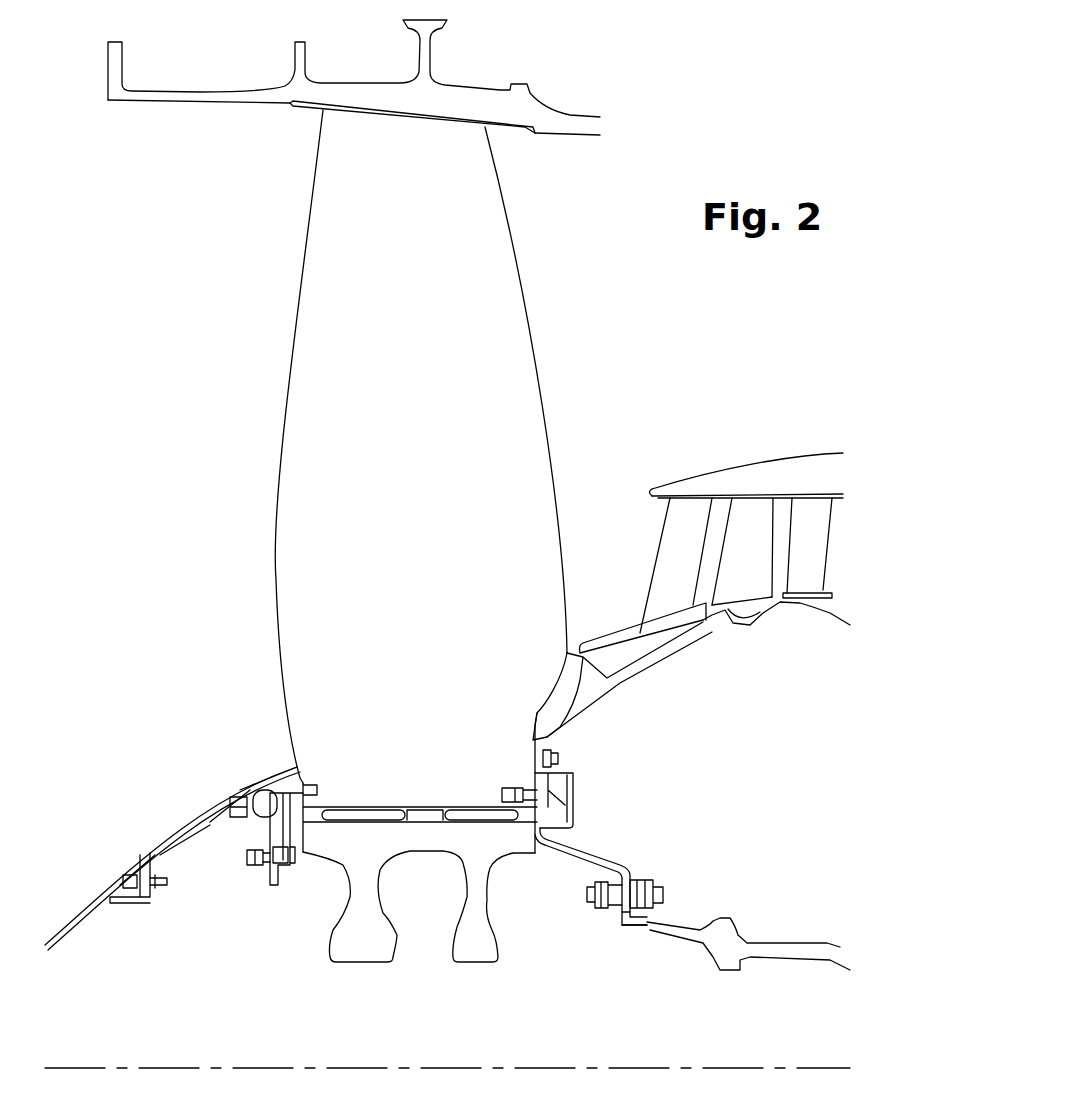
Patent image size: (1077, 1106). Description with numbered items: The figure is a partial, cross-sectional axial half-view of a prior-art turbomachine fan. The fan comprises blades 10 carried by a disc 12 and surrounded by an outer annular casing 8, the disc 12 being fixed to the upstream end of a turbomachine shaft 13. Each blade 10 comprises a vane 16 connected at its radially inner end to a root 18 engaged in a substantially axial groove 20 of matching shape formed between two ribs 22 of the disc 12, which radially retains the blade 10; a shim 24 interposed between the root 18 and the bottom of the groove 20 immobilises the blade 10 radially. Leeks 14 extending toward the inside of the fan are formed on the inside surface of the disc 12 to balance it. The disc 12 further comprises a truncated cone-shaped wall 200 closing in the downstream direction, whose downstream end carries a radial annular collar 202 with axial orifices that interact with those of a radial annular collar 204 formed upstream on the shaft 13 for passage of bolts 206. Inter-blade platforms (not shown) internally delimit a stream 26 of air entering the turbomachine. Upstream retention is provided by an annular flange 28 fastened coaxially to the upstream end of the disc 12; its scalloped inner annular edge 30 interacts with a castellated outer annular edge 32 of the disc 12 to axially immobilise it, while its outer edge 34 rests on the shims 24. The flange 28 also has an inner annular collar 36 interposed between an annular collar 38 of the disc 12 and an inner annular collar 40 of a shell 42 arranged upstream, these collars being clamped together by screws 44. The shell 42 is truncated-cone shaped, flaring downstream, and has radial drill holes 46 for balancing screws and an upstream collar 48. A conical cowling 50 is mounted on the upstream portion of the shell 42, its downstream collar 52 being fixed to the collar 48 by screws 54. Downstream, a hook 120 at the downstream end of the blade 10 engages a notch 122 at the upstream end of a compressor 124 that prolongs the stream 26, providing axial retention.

The outer annular casing 8 is at (310, 90).
The blade 10 is at (483, 389).
The disc 12 is at (390, 869).
The turbomachine shaft 13 is at (708, 940).
The leeks 14 is at (367, 942).
The vane 16 is at (415, 461).
The root 18 is at (387, 803).
The groove 20 is at (440, 800).
The ribs 22 is at (422, 803).
The shim 24 is at (350, 803).
The stream 26 is at (152, 573).
The annular flange 28 is at (253, 790).
The inner annular edge 30 is at (297, 833).
The outer annular edge 32 is at (292, 858).
The outer edge 34 is at (275, 790).
The inner annular collar 36 is at (265, 867).
The annular collar 38 is at (272, 887).
The inner annular collar 40 is at (250, 866).
The shell 42 is at (178, 850).
The screws 44 is at (247, 852).
The radial drill holes 46 is at (240, 797).
The collar 48 is at (150, 856).
The conical cowling 50 is at (67, 922).
The collar 52 is at (140, 856).
The screws 54 is at (160, 887).
The hook 120 is at (557, 798).
The notch 122 is at (537, 770).
The compressor 124 is at (637, 692).
The truncated cone-shaped wall 200 is at (577, 860).
The radial annular collar 202 is at (627, 927).
The radial annular collar 204 is at (636, 878).
The bolts 206 is at (587, 895).